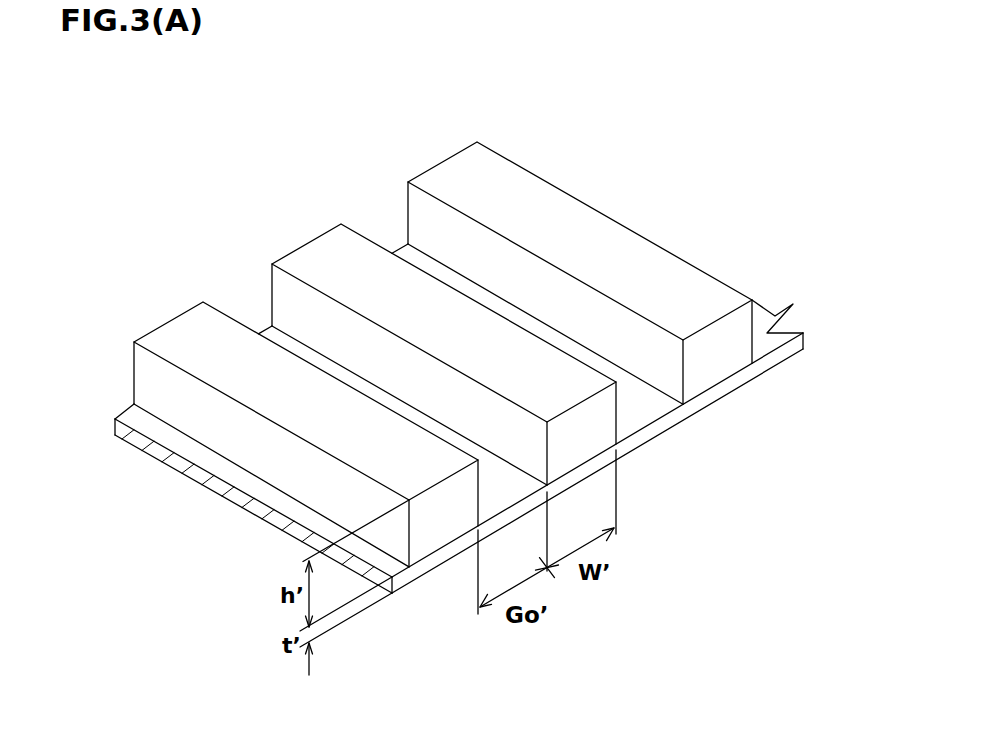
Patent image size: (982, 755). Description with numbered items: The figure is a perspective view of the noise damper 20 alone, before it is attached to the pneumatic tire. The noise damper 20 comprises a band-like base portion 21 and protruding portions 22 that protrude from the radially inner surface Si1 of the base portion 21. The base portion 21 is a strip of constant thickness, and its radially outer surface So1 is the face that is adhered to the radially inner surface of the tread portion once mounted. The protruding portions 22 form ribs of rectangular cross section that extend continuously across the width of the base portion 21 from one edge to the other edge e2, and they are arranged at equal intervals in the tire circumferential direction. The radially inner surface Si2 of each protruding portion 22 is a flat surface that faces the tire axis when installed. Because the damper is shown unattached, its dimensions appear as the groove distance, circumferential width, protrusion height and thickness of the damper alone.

The noise damper 20 is at (468, 361).
The base portion 21 is at (263, 328).
The protruding portions 22 is at (168, 322).
The radially inner surface of the base portion Si1 is at (653, 422).
The radially inner surface of the protruding portion Si2 is at (683, 293).
The radially outer surface of the base portion So1 is at (650, 442).
The other edge of the base portion e2 is at (398, 573).